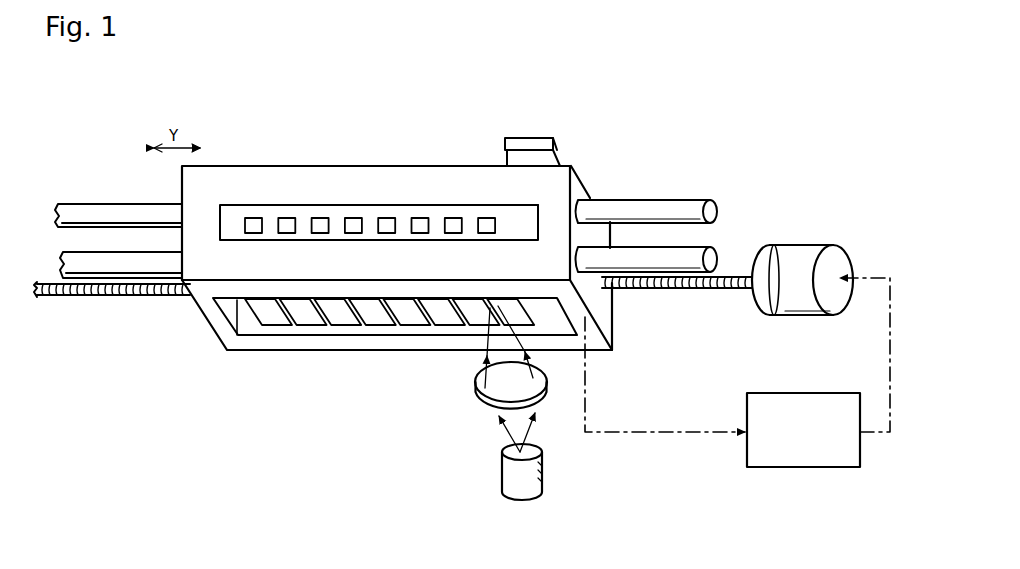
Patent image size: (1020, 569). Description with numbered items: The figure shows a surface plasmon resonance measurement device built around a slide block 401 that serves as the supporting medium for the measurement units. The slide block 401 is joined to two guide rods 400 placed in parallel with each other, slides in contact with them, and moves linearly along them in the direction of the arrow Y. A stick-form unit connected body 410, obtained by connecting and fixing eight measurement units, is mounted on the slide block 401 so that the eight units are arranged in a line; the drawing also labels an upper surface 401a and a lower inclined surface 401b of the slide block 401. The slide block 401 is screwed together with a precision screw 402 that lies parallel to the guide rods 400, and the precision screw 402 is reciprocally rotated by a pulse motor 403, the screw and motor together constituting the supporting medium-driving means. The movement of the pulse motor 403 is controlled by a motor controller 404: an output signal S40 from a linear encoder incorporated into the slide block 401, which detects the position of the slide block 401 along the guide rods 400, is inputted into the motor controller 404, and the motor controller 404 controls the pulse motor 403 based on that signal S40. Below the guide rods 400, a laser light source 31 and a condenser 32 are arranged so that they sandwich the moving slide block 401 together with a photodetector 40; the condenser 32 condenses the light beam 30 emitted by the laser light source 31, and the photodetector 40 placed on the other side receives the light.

The slide block 401 is at (343, 163).
The unit connected body 410 is at (234, 211).
The upper surface of housing 401a is at (516, 206).
The lower inclined surface of housing 401b is at (233, 322).
The photodetector 40 is at (534, 137).
The guide rod 400 is at (640, 256).
The precision screw 402 is at (666, 290).
The pulse motor 403 is at (790, 313).
The motor controller 404 is at (782, 468).
The output signal S40 is at (640, 430).
The condenser lens 32 is at (478, 403).
The light beam 30 is at (505, 438).
The laser light source 31 is at (503, 480).